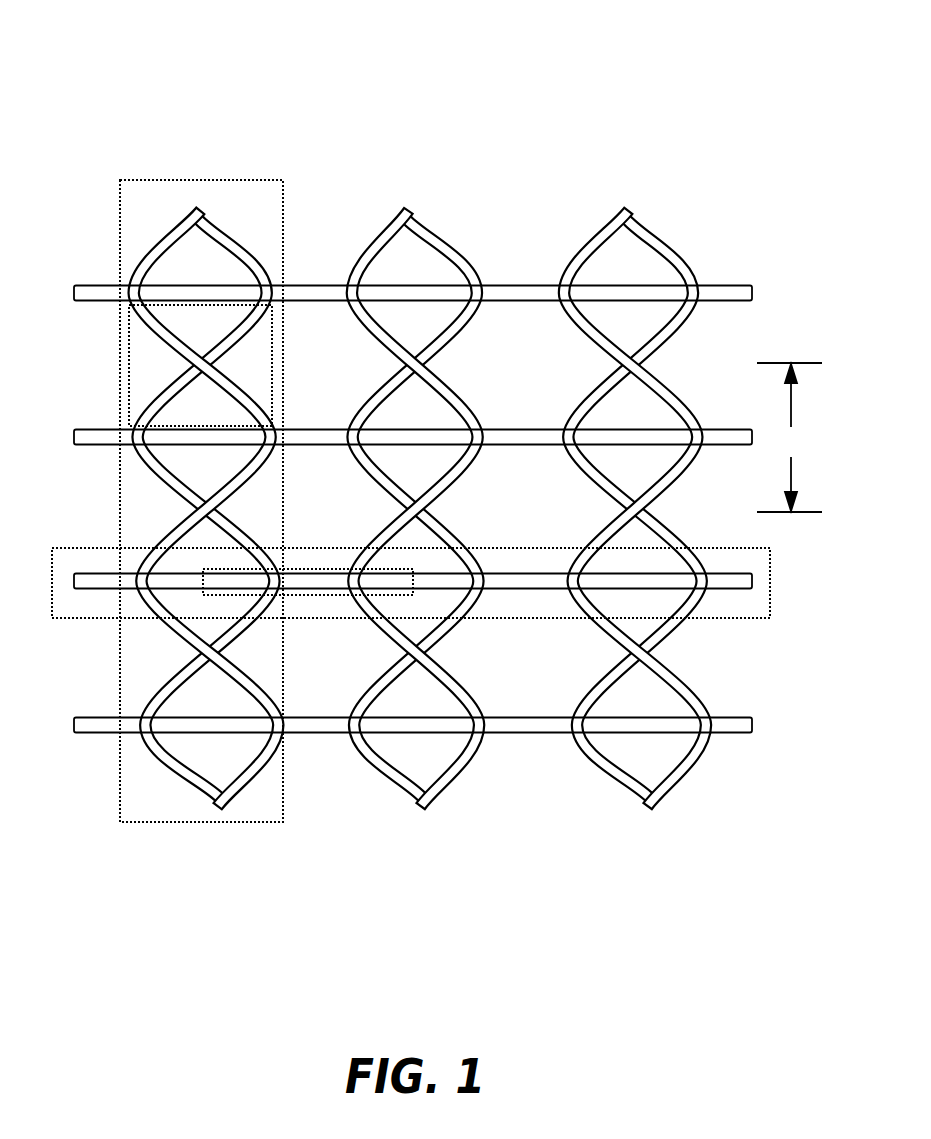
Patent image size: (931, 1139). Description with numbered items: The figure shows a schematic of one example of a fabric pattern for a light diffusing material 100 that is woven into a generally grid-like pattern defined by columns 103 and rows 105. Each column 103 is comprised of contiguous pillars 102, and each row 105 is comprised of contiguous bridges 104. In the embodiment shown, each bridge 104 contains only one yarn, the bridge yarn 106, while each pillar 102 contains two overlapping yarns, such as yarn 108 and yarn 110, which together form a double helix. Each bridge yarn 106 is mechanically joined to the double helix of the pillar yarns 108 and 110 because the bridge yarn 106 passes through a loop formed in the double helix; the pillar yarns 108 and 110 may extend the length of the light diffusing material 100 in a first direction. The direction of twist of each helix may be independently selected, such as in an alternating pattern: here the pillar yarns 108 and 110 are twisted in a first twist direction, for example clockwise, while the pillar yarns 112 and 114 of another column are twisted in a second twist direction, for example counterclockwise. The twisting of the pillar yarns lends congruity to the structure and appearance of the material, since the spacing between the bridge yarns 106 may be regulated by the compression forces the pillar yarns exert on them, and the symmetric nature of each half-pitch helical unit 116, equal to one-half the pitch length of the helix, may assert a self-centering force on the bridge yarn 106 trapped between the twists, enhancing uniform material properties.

The light diffusing material 100 is at (435, 416).
The pillar 102 is at (125, 358).
The column 103 is at (228, 180).
The bridge 104 is at (328, 565).
The row 105 is at (517, 547).
The bridge yarn 106 is at (316, 712).
The pillar yarn 108 is at (145, 226).
The pillar yarn 110 is at (250, 245).
The pillar yarn 112 is at (372, 240).
The pillar yarn 114 is at (478, 258).
The half-pitch helical unit 116 is at (789, 437).